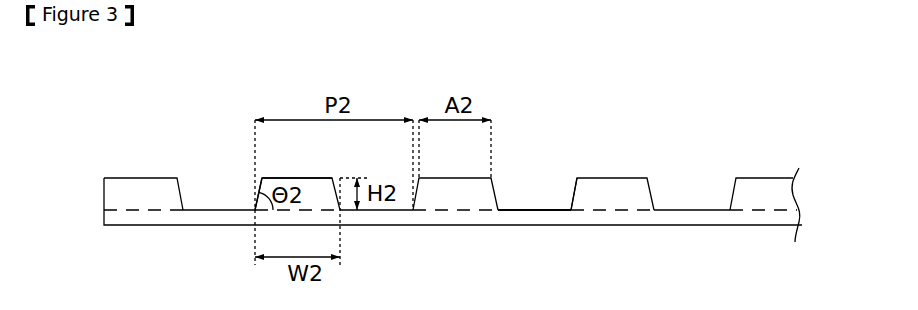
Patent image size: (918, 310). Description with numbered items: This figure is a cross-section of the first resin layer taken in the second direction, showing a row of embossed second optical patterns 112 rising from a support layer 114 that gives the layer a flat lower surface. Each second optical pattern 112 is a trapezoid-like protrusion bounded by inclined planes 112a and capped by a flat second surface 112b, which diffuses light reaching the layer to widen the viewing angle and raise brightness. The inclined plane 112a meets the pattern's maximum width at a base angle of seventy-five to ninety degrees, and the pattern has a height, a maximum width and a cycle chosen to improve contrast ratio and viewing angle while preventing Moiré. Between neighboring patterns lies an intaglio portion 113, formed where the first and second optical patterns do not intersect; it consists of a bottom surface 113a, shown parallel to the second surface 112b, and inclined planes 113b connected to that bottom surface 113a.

The second optical pattern 112 is at (313, 186).
The inclined plane 112a is at (258, 192).
The second surface 112b is at (320, 188).
The intaglio portion 113 is at (532, 186).
The bottom surface 113a is at (547, 212).
The inclined plane 113b is at (574, 195).
The support layer 114 is at (757, 217).